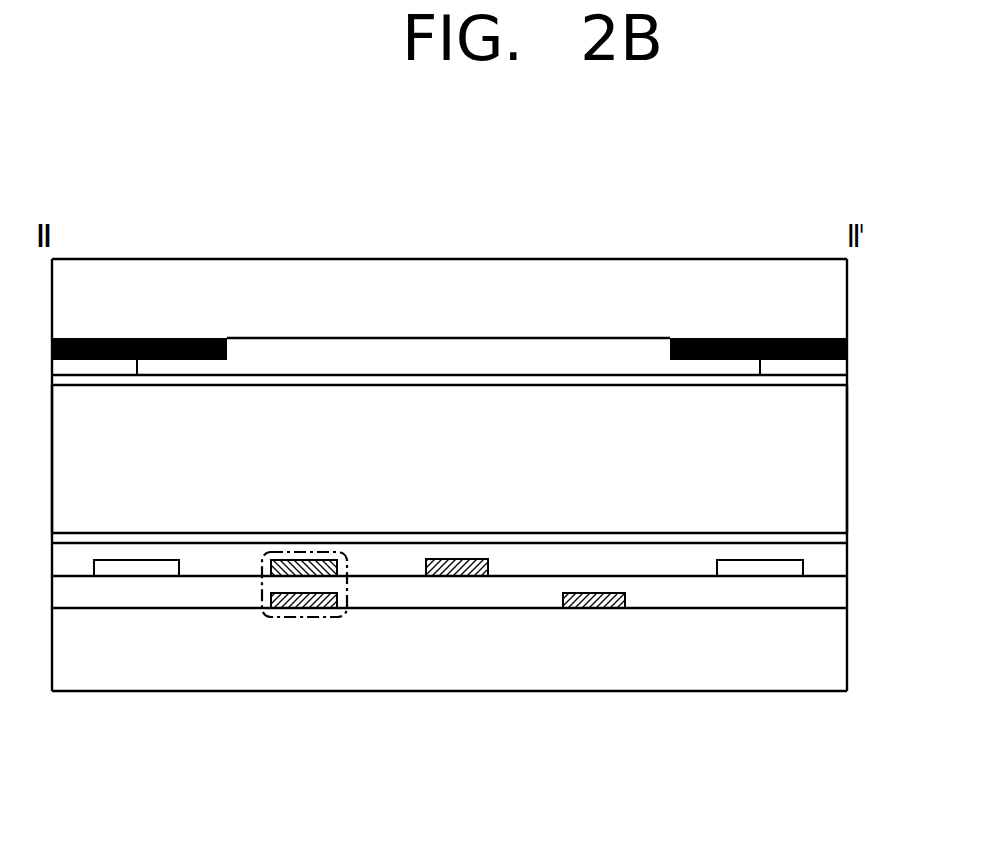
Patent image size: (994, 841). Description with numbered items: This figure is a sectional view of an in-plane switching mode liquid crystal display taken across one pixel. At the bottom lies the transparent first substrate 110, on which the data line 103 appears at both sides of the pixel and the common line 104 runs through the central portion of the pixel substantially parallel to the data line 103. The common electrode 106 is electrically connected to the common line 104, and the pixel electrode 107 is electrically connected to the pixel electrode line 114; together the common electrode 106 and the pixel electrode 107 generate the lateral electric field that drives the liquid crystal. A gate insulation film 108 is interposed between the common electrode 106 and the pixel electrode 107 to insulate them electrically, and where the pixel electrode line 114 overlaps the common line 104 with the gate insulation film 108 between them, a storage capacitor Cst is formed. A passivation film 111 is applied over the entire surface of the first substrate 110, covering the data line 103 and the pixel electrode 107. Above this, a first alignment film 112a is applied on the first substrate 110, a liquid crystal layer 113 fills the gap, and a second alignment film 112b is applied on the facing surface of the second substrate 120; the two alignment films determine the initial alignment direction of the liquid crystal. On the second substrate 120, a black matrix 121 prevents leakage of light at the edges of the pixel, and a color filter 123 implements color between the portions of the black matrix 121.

The second substrate 120 is at (838, 300).
The black matrix 121 is at (847, 348).
The color filter 123 is at (473, 355).
The second alignment film 112b is at (838, 382).
The liquid crystal layer 113 is at (838, 466).
The first alignment film 112a is at (838, 540).
The passivation film 111 is at (838, 560).
The gate insulation film 108 is at (838, 597).
The first substrate 110 is at (838, 652).
The data line 103 is at (128, 569).
The storage capacitor Cst is at (262, 596).
The pixel electrode line 114 is at (323, 570).
The common line 104 is at (283, 610).
The pixel electrode 107 is at (458, 576).
The common electrode 106 is at (593, 610).